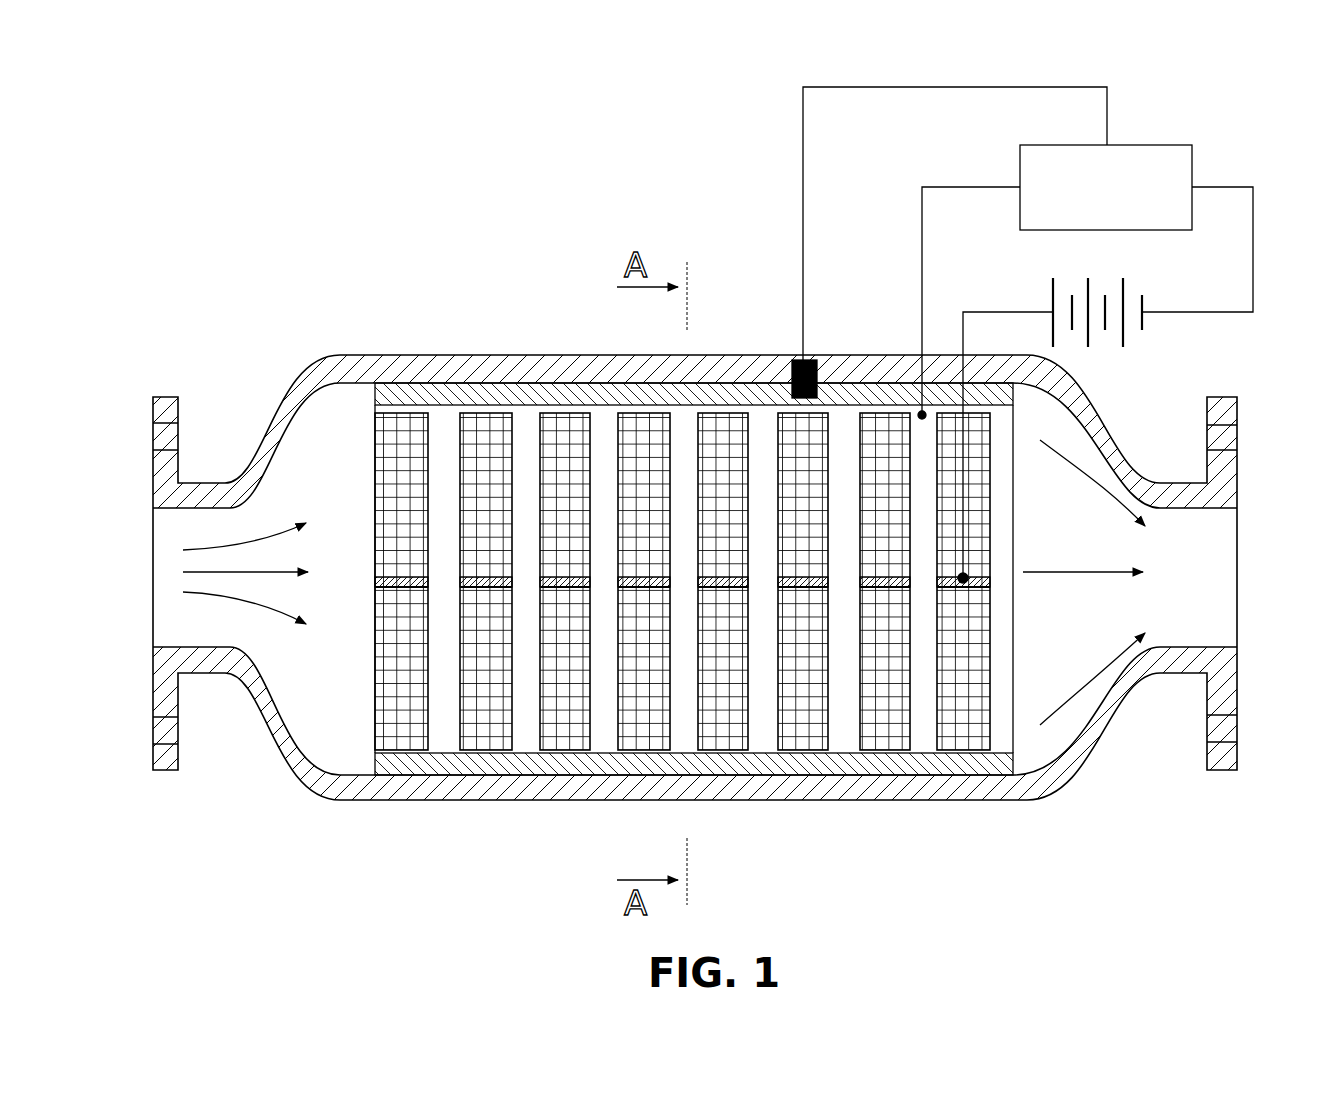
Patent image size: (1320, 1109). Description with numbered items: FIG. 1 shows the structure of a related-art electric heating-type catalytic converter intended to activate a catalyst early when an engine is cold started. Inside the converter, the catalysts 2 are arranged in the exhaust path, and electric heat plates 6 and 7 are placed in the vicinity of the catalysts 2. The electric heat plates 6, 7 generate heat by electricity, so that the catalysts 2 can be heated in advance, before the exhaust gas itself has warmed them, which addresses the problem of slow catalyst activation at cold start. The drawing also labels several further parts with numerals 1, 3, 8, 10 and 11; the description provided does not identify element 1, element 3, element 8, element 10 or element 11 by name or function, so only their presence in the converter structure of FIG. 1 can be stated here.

The exhaust gas purification device 1 is at (703, 481).
The catalysts 2 is at (372, 450).
The case 3 is at (557, 372).
The electric heat plate 6 is at (920, 728).
The electric heat plate 7 is at (447, 585).
The holding mat 8 is at (482, 402).
The sensor 10 is at (762, 358).
The ECU 11 is at (1158, 143).